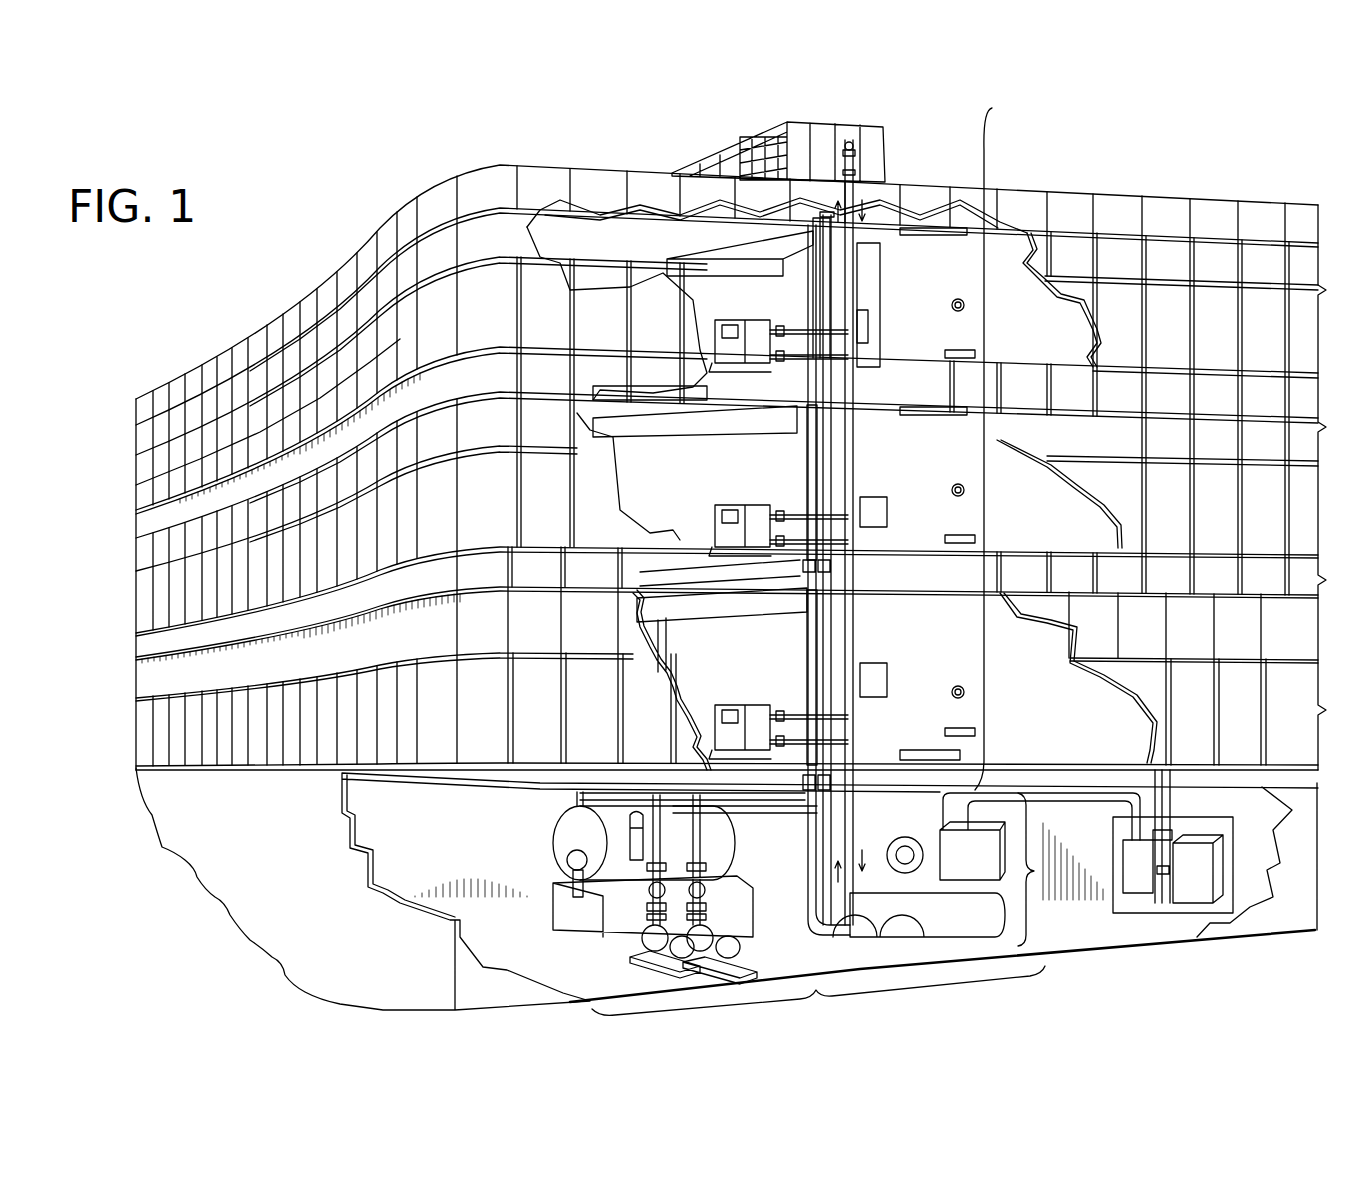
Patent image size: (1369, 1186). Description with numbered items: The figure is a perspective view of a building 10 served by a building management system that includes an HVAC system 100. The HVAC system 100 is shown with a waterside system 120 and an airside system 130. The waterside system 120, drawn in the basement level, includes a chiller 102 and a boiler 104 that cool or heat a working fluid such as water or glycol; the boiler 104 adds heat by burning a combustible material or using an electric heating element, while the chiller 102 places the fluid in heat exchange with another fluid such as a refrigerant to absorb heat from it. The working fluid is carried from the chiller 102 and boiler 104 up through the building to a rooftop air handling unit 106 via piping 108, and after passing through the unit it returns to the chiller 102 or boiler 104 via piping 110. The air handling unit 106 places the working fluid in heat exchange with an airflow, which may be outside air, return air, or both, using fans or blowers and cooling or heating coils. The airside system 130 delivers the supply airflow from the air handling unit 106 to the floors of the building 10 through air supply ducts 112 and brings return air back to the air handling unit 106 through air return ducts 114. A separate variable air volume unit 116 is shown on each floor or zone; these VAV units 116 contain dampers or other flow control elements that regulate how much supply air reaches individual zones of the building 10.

The building 10 is at (289, 228).
The HVAC system 100 is at (818, 998).
The chiller 102 is at (935, 912).
The boiler 104 is at (566, 840).
The rooftop air handling unit (AHU) 106 is at (877, 172).
The piping 108 is at (790, 124).
The piping 110 is at (853, 150).
The air supply ducts 112 is at (813, 247).
The air return ducts 114 is at (717, 377).
The variable air volume (VAV) units 116 is at (763, 330).
The waterside system 120 is at (1037, 870).
The airside system 130 is at (1000, 451).